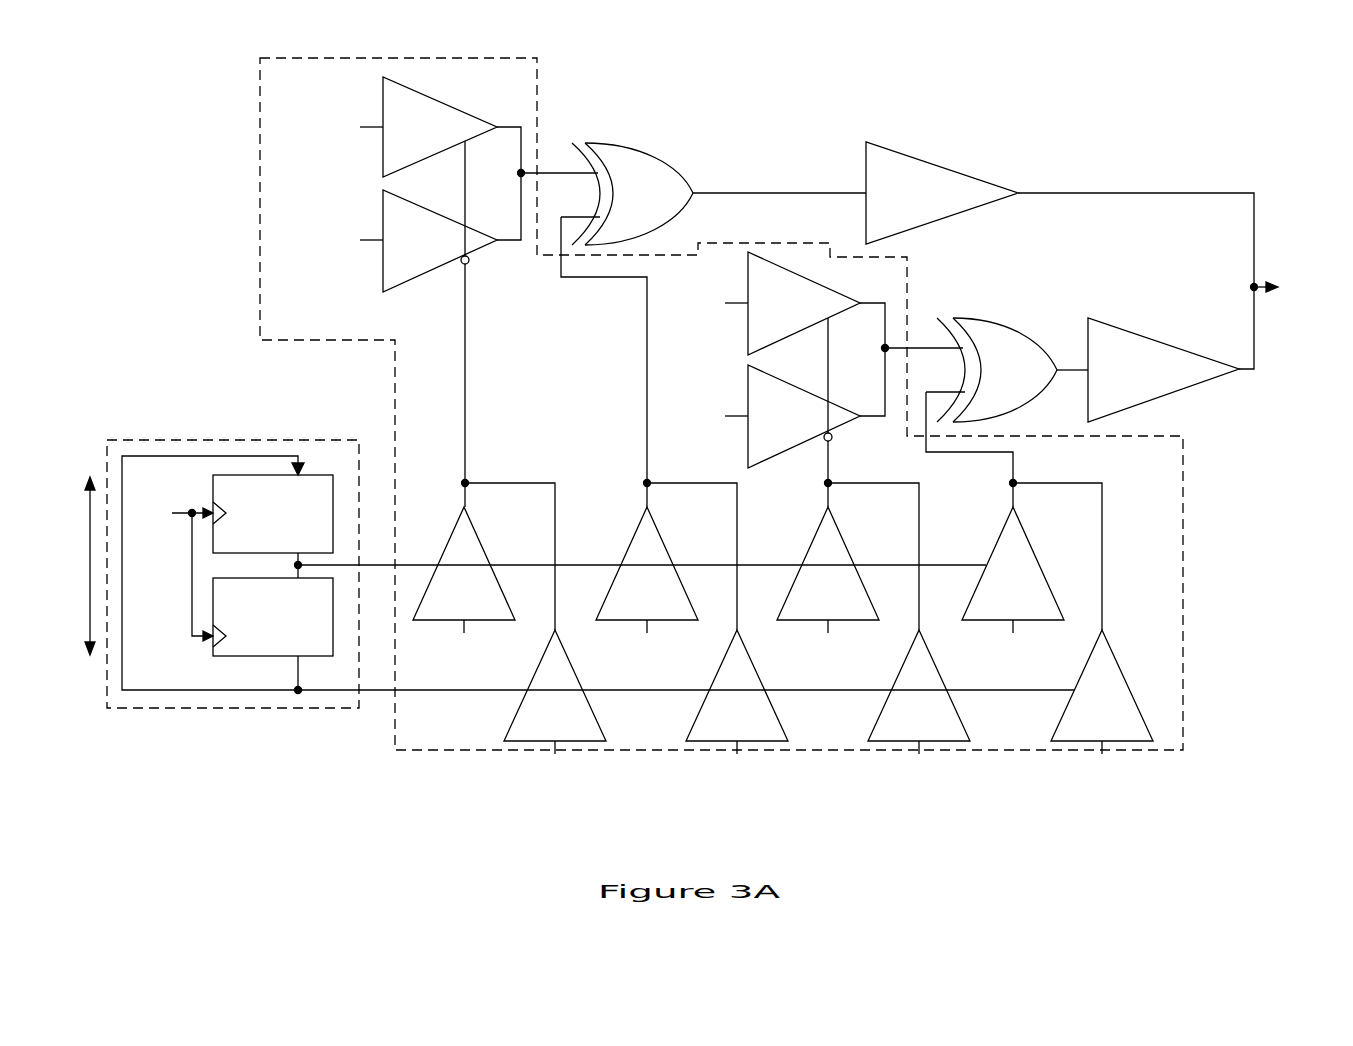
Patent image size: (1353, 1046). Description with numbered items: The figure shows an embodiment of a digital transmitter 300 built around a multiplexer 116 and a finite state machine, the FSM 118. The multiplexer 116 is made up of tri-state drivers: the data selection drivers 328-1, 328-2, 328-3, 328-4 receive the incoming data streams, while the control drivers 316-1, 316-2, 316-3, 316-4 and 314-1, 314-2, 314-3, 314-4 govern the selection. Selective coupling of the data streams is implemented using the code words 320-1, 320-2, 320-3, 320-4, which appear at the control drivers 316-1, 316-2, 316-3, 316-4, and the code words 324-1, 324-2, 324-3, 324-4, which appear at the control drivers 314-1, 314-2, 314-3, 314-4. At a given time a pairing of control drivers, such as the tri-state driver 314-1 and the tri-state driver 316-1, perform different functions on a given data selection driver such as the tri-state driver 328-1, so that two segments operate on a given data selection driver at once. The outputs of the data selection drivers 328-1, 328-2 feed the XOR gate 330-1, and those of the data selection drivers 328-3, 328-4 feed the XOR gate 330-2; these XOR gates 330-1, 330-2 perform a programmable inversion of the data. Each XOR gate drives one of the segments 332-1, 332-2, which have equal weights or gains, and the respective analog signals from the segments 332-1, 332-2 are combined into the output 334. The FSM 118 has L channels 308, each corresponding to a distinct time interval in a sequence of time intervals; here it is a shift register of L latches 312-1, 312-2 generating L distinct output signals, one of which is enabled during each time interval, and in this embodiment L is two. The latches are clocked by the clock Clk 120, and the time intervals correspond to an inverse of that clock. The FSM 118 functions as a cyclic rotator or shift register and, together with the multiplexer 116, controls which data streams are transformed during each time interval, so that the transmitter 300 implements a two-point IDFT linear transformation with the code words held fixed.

The transmitter 300 is at (1158, 100).
The multiplexer 116 is at (1183, 629).
The FSM 118 is at (233, 540).
The clock Clk 120 is at (174, 567).
The L channels 308 is at (70, 566).
The latch 312-1 is at (247, 525).
The latch 312-2 is at (247, 626).
The tri-state driver 328-1 is at (395, 136).
The tri-state driver 328-2 is at (395, 250).
The tri-state driver 328-3 is at (760, 311).
The tri-state driver 328-4 is at (760, 428).
The XOR gate 330-1 is at (667, 205).
The XOR gate 330-2 is at (1032, 381).
The segment 332-1 is at (934, 191).
The segment 332-2 is at (1157, 370).
The output 334 is at (1297, 288).
The tri-state driver 316-1 is at (438, 605).
The tri-state driver 316-2 is at (621, 605).
The tri-state driver 316-3 is at (802, 605).
The tri-state driver 316-4 is at (987, 605).
The code word 320-1 is at (464, 650).
The code word 320-2 is at (647, 650).
The code word 320-3 is at (828, 650).
The code word 320-4 is at (1013, 650).
The tri-state driver 314-1 is at (529, 726).
The tri-state driver 314-2 is at (711, 726).
The tri-state driver 314-3 is at (893, 726).
The tri-state driver 314-4 is at (1076, 726).
The code word 324-1 is at (555, 771).
The code word 324-2 is at (737, 771).
The code word 324-3 is at (919, 771).
The code word 324-4 is at (1102, 771).